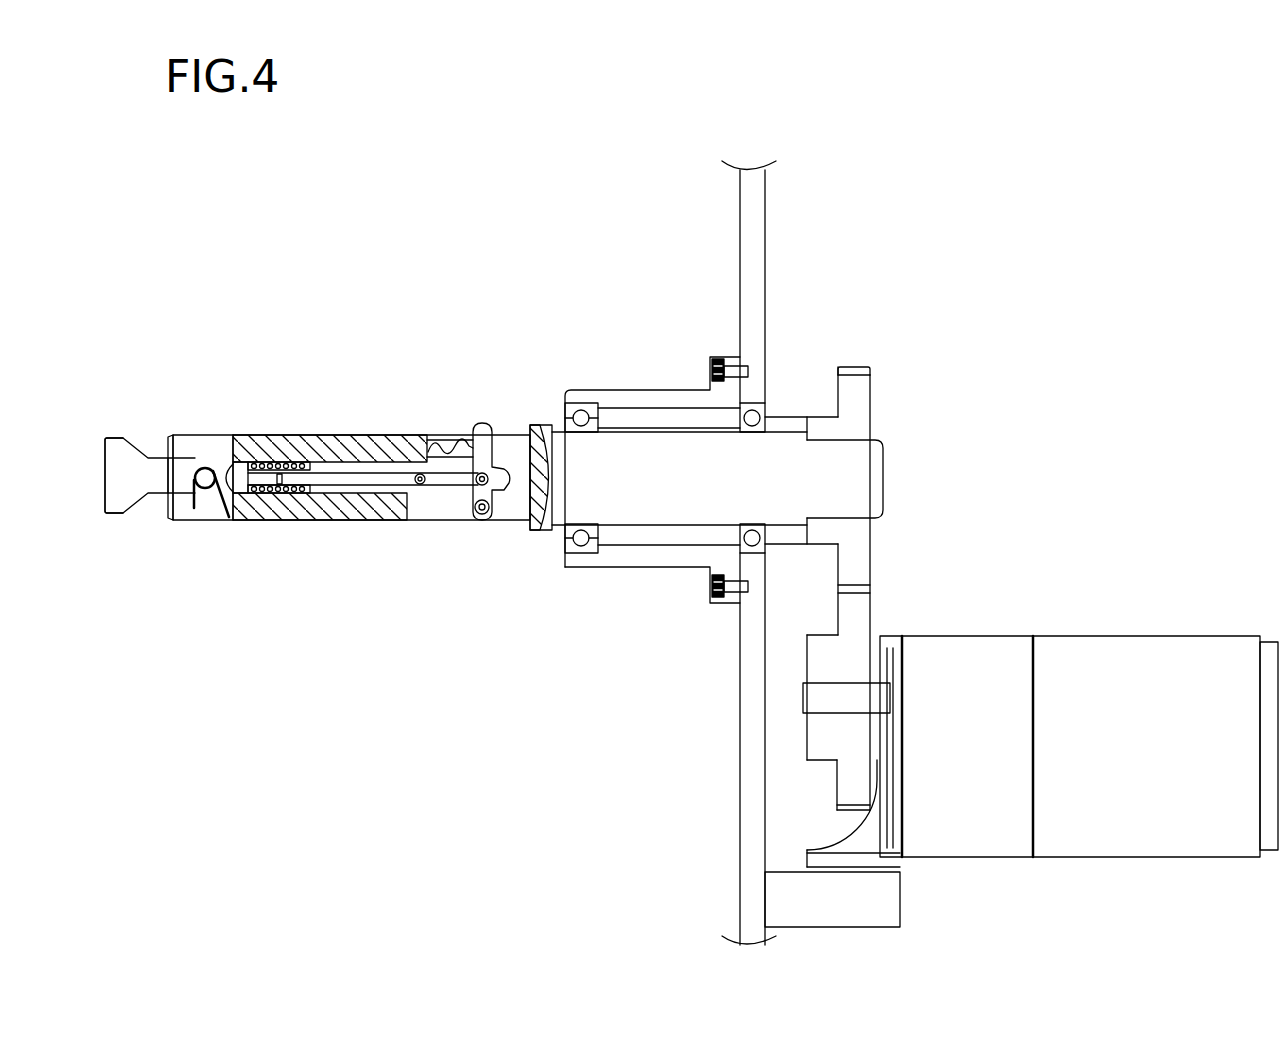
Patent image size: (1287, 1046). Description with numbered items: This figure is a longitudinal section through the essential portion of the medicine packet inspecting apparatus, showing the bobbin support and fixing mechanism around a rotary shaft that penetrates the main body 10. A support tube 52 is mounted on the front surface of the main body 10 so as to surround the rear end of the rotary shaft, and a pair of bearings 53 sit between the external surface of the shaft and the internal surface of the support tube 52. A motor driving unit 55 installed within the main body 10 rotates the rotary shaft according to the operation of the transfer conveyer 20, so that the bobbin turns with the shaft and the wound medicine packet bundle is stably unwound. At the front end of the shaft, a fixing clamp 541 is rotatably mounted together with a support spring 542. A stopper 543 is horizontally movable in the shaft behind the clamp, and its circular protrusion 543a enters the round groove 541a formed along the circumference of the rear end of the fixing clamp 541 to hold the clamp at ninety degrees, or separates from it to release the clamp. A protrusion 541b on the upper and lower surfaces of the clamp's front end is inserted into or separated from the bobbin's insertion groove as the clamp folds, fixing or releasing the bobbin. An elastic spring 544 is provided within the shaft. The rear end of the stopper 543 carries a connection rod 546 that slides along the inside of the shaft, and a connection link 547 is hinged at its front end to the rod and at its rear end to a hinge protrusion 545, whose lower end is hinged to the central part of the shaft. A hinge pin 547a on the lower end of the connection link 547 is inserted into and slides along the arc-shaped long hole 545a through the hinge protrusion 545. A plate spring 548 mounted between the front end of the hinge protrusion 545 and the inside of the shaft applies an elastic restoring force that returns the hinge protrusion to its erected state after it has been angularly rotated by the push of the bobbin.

The main body 10 is at (742, 745).
The transfer conveyer 20 is at (298, 460).
The support tube 52 is at (660, 400).
The bearings 53 is at (579, 412).
The motor driving unit 55 is at (990, 648).
The fixing clamp 541 is at (157, 488).
The round groove 541a is at (206, 497).
The protrusion 541b is at (108, 467).
The support spring 542 is at (193, 455).
The stopper 543 is at (238, 482).
The circular protrusion 543a is at (224, 468).
The elastic spring 544 is at (305, 500).
The hinge protrusion 545 is at (481, 428).
The arc-shaped long hole 545a is at (515, 492).
The connection rod 546 is at (381, 482).
The connection link 547 is at (440, 482).
The hinge pin 547a is at (470, 492).
The plate spring 548 is at (442, 445).